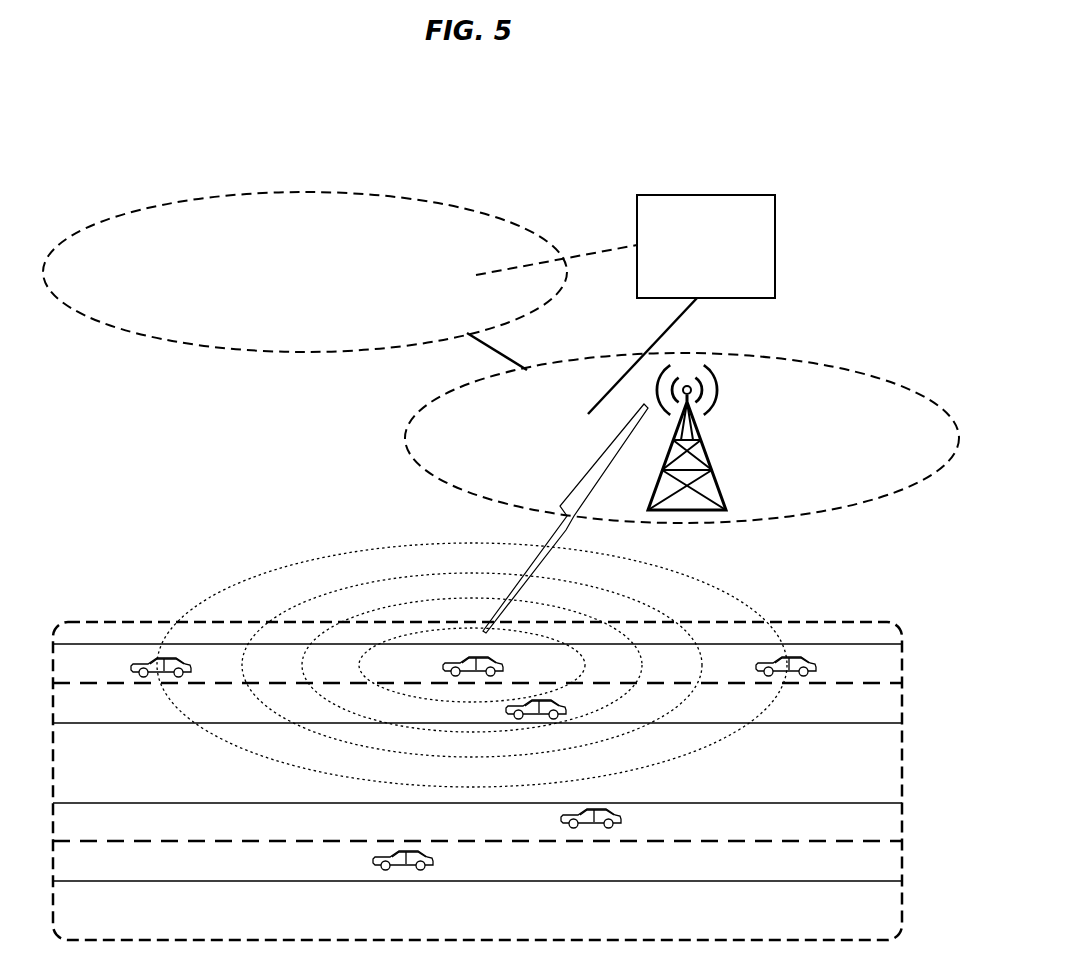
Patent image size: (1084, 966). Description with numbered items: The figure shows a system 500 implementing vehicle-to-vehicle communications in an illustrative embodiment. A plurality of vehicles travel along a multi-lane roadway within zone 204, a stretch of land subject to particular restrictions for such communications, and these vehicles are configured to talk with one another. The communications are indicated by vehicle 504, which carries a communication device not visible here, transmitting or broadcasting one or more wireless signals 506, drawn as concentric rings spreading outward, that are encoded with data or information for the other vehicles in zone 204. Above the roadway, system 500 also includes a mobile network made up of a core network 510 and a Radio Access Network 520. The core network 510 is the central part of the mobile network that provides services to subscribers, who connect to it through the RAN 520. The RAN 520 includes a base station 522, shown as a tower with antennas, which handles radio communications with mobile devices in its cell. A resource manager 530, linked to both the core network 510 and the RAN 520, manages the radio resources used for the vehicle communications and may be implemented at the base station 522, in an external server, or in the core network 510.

The system 500 is at (832, 98).
The core network 510 is at (320, 284).
The Radio Access Network (RAN) 520 is at (898, 459).
The base station 522 is at (710, 453).
The resource manager 530 is at (725, 289).
The vehicle 504 is at (462, 657).
The wireless signals 506 is at (240, 582).
The zone 204 is at (527, 928).